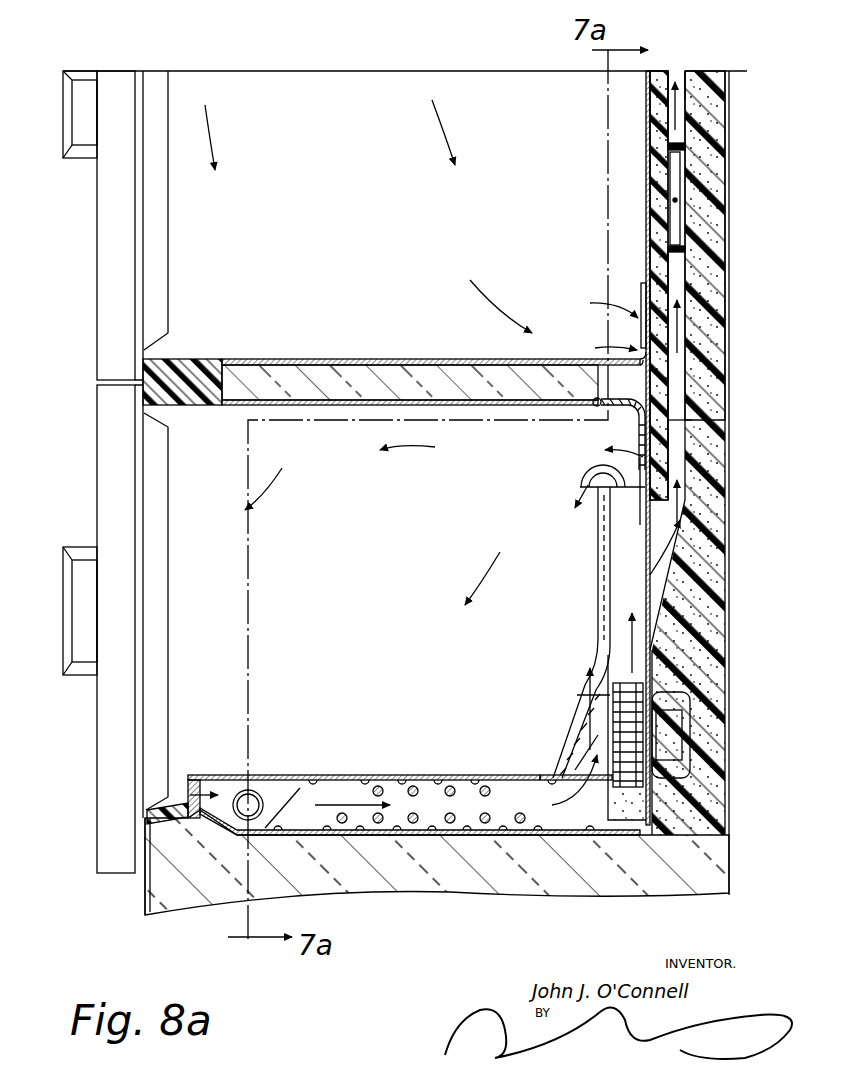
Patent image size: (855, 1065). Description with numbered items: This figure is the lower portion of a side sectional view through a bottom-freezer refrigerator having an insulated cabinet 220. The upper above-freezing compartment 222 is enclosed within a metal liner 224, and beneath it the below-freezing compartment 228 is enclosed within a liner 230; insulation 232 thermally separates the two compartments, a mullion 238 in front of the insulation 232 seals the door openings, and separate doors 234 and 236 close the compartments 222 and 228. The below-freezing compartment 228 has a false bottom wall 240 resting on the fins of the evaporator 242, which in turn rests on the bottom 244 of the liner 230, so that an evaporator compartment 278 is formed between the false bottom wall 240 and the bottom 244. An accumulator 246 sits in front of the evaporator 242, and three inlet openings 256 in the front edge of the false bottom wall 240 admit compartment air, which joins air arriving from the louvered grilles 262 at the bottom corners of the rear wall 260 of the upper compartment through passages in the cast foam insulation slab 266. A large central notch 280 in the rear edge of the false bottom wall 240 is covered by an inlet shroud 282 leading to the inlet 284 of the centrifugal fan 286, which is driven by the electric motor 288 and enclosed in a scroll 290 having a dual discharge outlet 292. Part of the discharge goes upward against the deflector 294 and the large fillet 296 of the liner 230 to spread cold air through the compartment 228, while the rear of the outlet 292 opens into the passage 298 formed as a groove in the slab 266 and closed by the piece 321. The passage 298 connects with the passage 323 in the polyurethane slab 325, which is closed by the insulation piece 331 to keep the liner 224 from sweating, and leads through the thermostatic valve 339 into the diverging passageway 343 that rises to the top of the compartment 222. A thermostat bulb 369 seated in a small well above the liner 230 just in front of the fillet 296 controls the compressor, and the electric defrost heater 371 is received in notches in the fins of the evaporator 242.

The insulated refrigerator cabinet 220 is at (800, 877).
The upper above-freezing compartment 222 is at (368, 216).
The metal liner 224 is at (646, 118).
The below-freezing compartment 228 is at (372, 536).
The liner 230 is at (325, 406).
The insulation 232 is at (400, 361).
The door 234 is at (114, 82).
The door 236 is at (100, 732).
The mullion 238 is at (196, 358).
The false bottom wall 240 is at (378, 775).
The evaporator 242 is at (425, 780).
The bottom 244 is at (385, 836).
The accumulator 246 is at (253, 789).
The inlet openings 256 is at (186, 793).
The rear wall 260 is at (648, 237).
The louvered air outlet grilles 262 is at (640, 335).
The cast foam insulation slab 266 is at (710, 628).
The evaporator compartment 278 is at (268, 788).
The central notch 280 is at (605, 770).
The inlet shroud 282 is at (588, 730).
The inlet 284 is at (600, 705).
The centrifugal fan 286 is at (613, 672).
The electric motor 288 is at (672, 748).
The scroll 290 is at (606, 685).
The dual discharge outlet 292 is at (600, 530).
The deflector 294 is at (585, 474).
The large fillet 296 is at (627, 412).
The passage 298 is at (668, 546).
The piece 321 is at (652, 470).
The passage 323 is at (678, 298).
The insulation slab 325 is at (718, 243).
The insulation piece 331 is at (663, 70).
The thermostatic valve 339 is at (679, 163).
The diverging passageway 343 is at (681, 100).
The thermostat bulb 369 is at (594, 398).
The electric defrost heater 371 is at (468, 831).